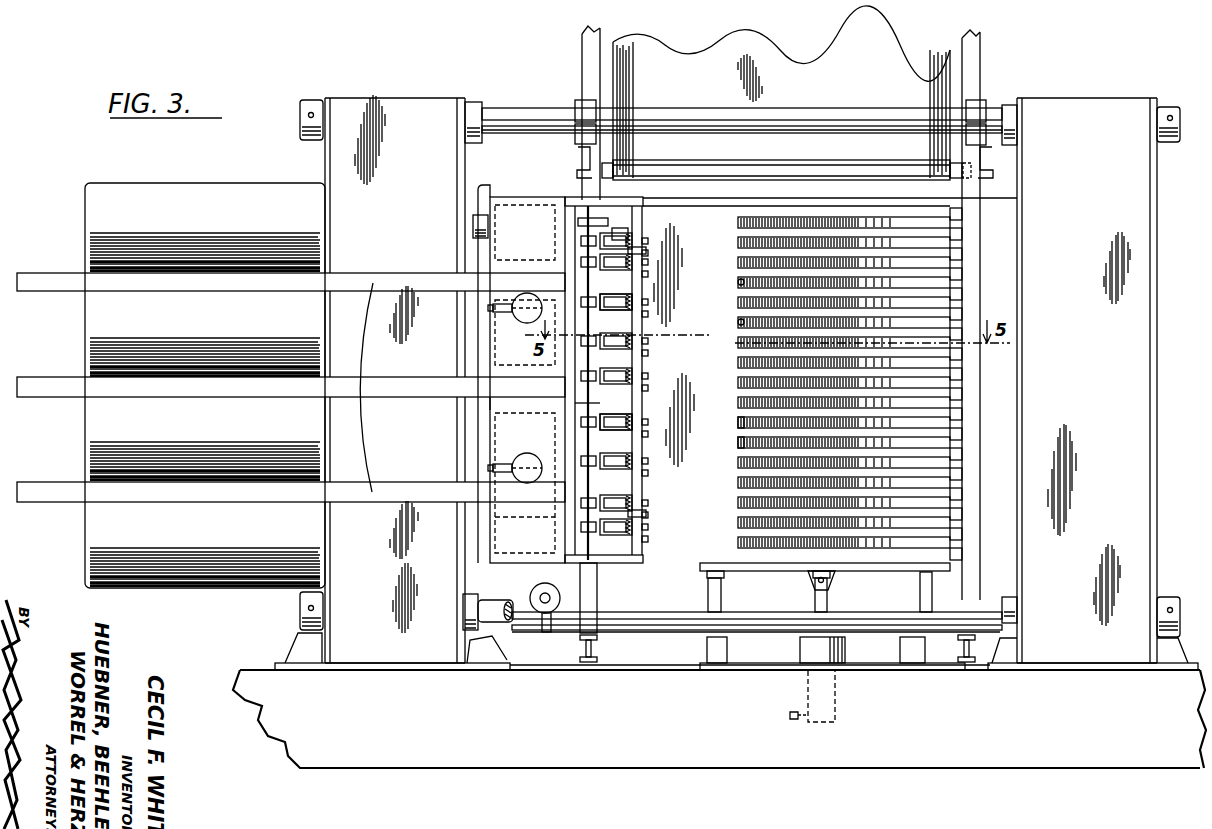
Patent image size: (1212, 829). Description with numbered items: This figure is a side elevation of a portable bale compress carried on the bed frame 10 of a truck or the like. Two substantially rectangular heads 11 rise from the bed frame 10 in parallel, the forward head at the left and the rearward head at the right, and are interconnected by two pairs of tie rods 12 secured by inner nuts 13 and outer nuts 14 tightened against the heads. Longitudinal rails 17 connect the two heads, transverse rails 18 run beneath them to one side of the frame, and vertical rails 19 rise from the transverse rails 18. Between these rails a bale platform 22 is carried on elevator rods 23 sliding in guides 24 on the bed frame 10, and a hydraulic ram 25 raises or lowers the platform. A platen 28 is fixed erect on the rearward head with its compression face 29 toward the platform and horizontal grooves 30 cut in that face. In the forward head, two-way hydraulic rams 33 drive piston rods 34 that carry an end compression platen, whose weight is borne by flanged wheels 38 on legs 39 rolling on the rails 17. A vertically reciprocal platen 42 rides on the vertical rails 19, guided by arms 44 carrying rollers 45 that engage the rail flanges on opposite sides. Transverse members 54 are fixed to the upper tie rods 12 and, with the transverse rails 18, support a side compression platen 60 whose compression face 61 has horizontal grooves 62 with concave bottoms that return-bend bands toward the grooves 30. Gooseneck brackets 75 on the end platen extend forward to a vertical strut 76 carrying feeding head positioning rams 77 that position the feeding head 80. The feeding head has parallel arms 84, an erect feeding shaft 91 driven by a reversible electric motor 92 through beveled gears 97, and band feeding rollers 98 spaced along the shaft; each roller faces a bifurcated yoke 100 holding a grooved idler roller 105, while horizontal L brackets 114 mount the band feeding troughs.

The bed frame 10 is at (735, 728).
The heads 11 is at (1135, 195).
The tie rods 12 is at (1002, 620).
The inner nuts 13 is at (1012, 608).
The outer nuts 14 is at (1168, 600).
The rails 17 is at (670, 625).
The transverse rails 18 is at (965, 662).
The vertical rails 19 is at (975, 66).
The bale platform 22 is at (750, 565).
The elevator rods 23 is at (925, 600).
The guides 24 is at (846, 648).
The hydraulic ram 25 is at (836, 706).
The platen 28 is at (963, 376).
The compression face 29 is at (950, 273).
The horizontal grooves 30 is at (963, 294).
The two-way hydraulic rams 33 is at (92, 528).
The piston rods 34 is at (524, 205).
The flanged wheels 38 is at (548, 618).
The legs 39 is at (546, 583).
The vertically reciprocal platen 42 is at (800, 62).
The arms 44 is at (950, 172).
The rollers 45 is at (958, 166).
The transverse members 54 is at (988, 164).
The side compression platen 60 is at (722, 391).
The compression face 61 is at (745, 444).
The horizontal grooves 62 is at (741, 319).
The gooseneck brackets 75 is at (356, 387).
The vertical strut 76 is at (498, 402).
The feeding head positioning rams 77 is at (520, 460).
The feeding head 80 is at (652, 361).
The arms 84 is at (600, 590).
The feeding shaft 91 is at (590, 405).
The reversible electric motor 92 is at (476, 222).
The beveled gears 97 is at (578, 222).
The band feeding rollers 98 is at (594, 523).
The bifurcated yoke 100 is at (625, 236).
The idler roller 105 is at (634, 468).
The L brackets 114 is at (646, 518).